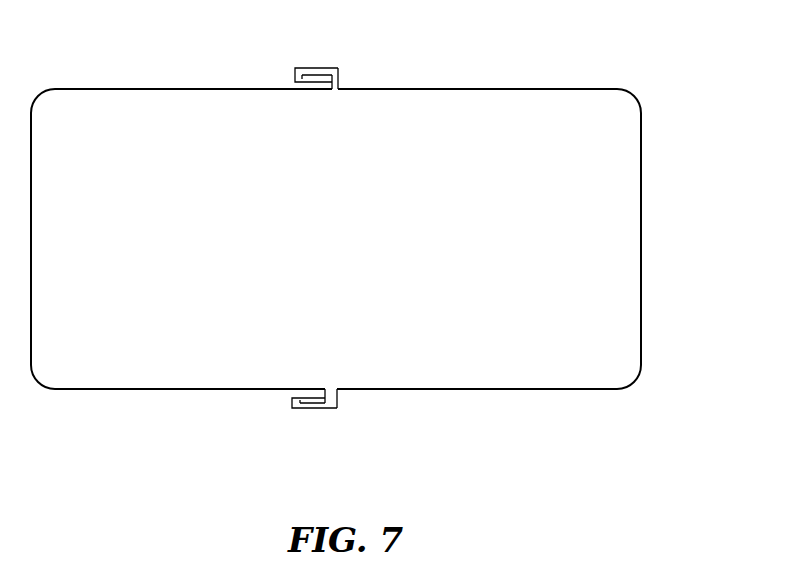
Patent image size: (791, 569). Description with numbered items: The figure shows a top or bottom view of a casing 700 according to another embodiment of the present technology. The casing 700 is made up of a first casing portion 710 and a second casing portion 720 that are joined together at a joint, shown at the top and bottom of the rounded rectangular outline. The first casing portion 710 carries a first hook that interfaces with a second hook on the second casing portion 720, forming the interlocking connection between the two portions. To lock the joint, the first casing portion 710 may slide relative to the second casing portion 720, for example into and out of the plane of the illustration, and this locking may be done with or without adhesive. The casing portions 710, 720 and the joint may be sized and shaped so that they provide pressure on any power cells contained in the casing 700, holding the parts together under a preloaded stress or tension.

The casing 700 is at (661, 74).
The first casing portion 710 is at (116, 389).
The second casing portion 720 is at (496, 389).